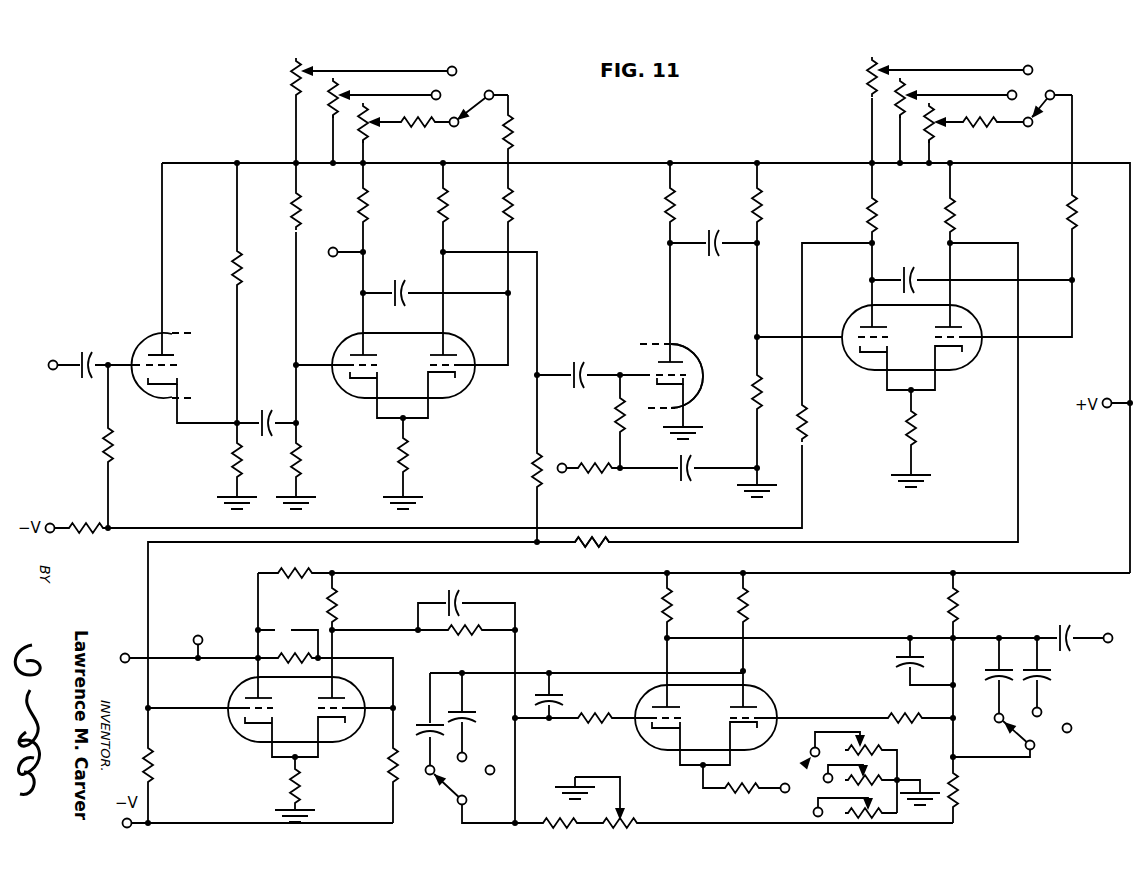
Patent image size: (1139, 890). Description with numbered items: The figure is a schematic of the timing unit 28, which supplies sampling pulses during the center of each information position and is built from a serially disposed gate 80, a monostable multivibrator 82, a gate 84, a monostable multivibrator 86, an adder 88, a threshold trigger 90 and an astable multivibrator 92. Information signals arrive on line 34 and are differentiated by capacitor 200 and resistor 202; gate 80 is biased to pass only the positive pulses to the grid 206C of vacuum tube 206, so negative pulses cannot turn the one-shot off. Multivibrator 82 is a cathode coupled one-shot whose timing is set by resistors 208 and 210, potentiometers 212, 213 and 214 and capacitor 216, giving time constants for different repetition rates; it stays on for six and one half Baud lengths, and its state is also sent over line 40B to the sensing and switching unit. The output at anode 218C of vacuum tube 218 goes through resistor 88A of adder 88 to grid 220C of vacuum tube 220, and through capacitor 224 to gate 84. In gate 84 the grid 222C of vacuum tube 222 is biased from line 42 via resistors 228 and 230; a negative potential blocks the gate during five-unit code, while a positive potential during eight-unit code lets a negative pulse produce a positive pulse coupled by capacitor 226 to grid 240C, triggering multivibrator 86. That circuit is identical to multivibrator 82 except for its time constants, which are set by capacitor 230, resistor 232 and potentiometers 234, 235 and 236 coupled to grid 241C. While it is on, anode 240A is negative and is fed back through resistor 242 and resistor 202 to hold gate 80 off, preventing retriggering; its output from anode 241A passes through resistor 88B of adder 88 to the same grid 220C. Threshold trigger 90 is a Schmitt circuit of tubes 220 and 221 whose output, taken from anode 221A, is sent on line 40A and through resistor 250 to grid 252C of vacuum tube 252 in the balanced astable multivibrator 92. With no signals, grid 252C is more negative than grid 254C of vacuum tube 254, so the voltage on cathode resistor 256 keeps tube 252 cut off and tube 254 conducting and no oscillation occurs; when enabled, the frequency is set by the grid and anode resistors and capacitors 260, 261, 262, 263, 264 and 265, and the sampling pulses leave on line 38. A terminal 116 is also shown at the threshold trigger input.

The timing unit 28 is at (69, 114).
The potentiometer 212 is at (292, 69).
The potentiometer 213 is at (328, 100).
The potentiometer 214 is at (370, 136).
The resistor 210 is at (512, 128).
The resistor 208 is at (512, 212).
The line 40B is at (333, 248).
The capacitor 216 is at (418, 284).
The monostable multivibrator 82 is at (469, 461).
The grid of vacuum tube 206 206C is at (352, 350).
The anode of vacuum tube 218 218C is at (462, 352).
The vacuum tube 206 is at (358, 401).
The vacuum tube 218 is at (483, 379).
The capacitor 224 is at (577, 360).
The gate 84 is at (643, 325).
The grid of vacuum tube 222 222C is at (638, 349).
The vacuum tube 222 is at (701, 361).
The resistor / capacitor 230 is at (616, 412).
The capacitor 226 is at (714, 238).
The potentiometer 234 is at (868, 62).
The potentiometer 235 is at (896, 96).
The potentiometer 236 is at (936, 132).
The resistor 232 is at (1076, 214).
The monostable multivibrator 86 is at (969, 447).
The anode of vacuum tube 240 240A is at (868, 320).
The anode 241A is at (952, 320).
The grid 240C is at (858, 352).
The grid 241C is at (966, 352).
The resistor 242 is at (808, 419).
The resistor 88A is at (533, 472).
The line 42 is at (562, 473).
The resistor 228 is at (592, 474).
The adder 88 is at (581, 527).
The resistor 88B is at (606, 545).
The line 34 is at (51, 360).
The capacitor 200 is at (90, 352).
The resistor 202 is at (104, 452).
The gate 80 is at (215, 371).
The line 40A is at (125, 653).
The terminal 116 is at (196, 631).
The grid of vacuum tube 220 220C is at (238, 700).
The anode of vacuum tube 221 221A is at (340, 694).
The vacuum tube 220 is at (225, 720).
The vacuum tube 221 is at (353, 746).
The threshold trigger 90 is at (209, 793).
The resistor 250 is at (464, 625).
The capacitor 262 is at (556, 690).
The capacitor 260 is at (425, 724).
The capacitor 261 is at (470, 712).
The astable multivibrator 92 is at (594, 761).
The grid of vacuum tube 252 252C is at (645, 693).
The vacuum tube 252 is at (649, 681).
The grid of vacuum tube 254 254C is at (765, 712).
The vacuum tube 254 is at (758, 679).
The capacitor 265 is at (895, 668).
The capacitor 263 is at (990, 665).
The line 38 is at (1108, 633).
The capacitor 264 is at (1045, 710).
The cathode resistor 256 is at (740, 795).